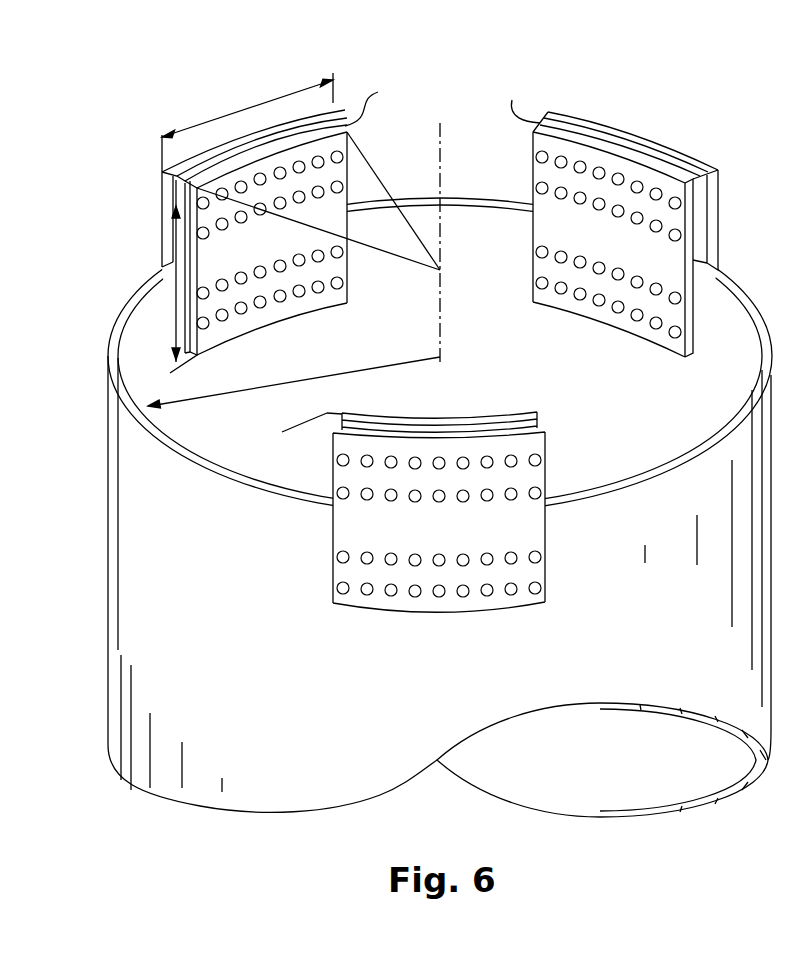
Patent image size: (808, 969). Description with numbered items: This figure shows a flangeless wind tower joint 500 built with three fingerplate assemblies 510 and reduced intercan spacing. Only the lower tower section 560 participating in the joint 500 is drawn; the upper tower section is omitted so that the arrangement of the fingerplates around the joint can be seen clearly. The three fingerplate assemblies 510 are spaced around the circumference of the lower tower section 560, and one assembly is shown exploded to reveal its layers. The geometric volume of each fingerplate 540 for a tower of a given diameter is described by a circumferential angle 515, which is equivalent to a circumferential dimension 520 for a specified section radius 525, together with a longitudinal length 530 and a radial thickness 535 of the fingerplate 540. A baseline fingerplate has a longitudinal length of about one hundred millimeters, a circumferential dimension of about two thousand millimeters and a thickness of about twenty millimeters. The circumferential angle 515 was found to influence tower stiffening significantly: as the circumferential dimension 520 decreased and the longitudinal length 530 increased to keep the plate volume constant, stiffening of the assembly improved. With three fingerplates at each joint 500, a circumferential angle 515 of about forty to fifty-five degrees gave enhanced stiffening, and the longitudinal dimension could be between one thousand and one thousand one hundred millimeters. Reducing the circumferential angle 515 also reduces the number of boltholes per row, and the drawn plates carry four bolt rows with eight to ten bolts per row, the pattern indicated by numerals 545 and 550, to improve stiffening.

The flangeless wind tower joint 500 is at (462, 47).
The fingerplate assembly 510 is at (678, 135).
The circumferential angle 515 is at (368, 243).
The circumferential dimension 520 is at (218, 122).
The section radius 525 is at (283, 384).
The longitudinal length 530 is at (180, 298).
The radial thickness 535 is at (163, 176).
The fingerplate 540 is at (393, 261).
The aperture 545 is at (340, 490).
The row of apertures 550 is at (330, 570).
The lower tower section 560 is at (582, 502).